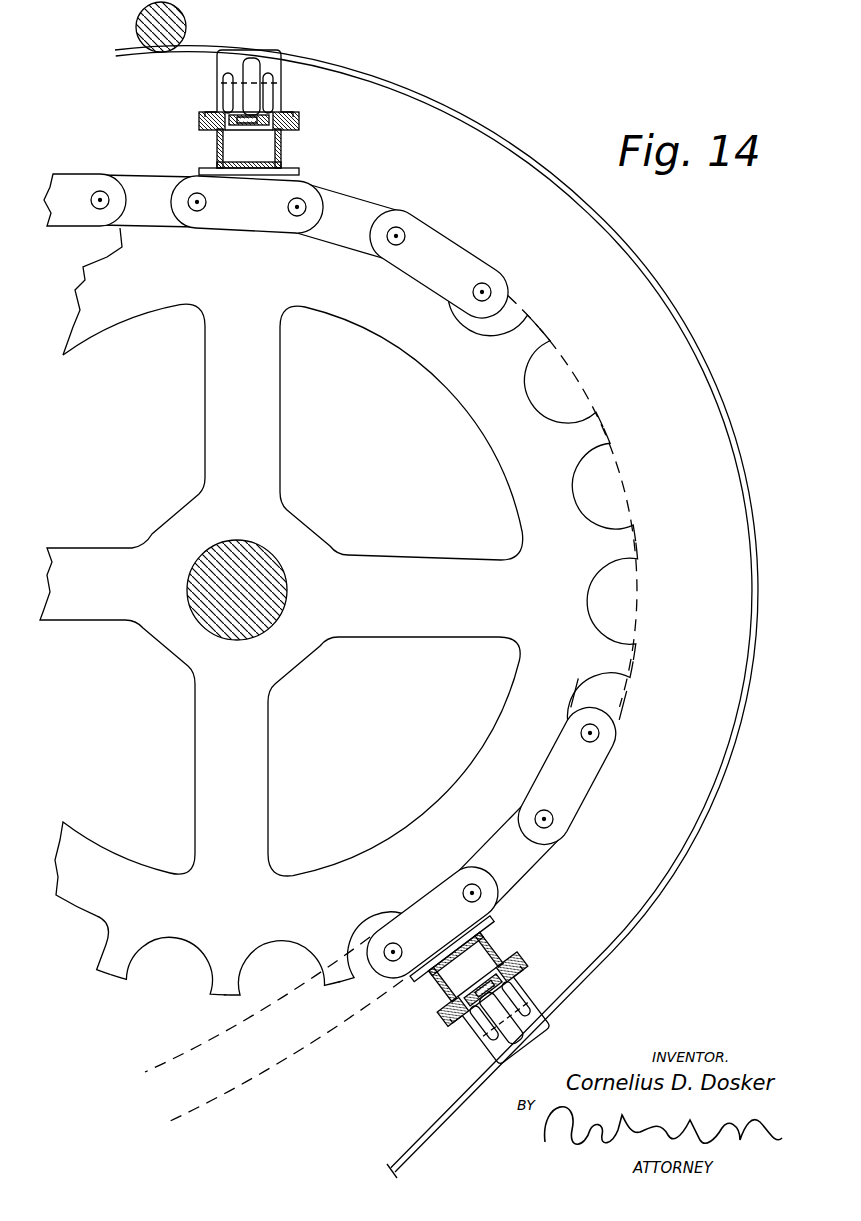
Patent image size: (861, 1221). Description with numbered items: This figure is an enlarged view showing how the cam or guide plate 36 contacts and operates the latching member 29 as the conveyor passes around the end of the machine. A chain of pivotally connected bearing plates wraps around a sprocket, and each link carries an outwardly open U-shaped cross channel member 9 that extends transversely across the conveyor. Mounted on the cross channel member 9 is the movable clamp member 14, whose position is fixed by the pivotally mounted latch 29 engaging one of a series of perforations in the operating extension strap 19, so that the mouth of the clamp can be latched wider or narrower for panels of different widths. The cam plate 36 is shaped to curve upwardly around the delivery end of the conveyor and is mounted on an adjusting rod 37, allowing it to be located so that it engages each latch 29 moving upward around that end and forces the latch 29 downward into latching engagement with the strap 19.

The cross channel member 9 is at (217, 148).
The movable clamp member 14 is at (217, 75).
The strap 19 is at (242, 127).
The latch 29 is at (250, 106).
The cam plate 36 is at (750, 560).
The adjusting rod 37 is at (136, 22).